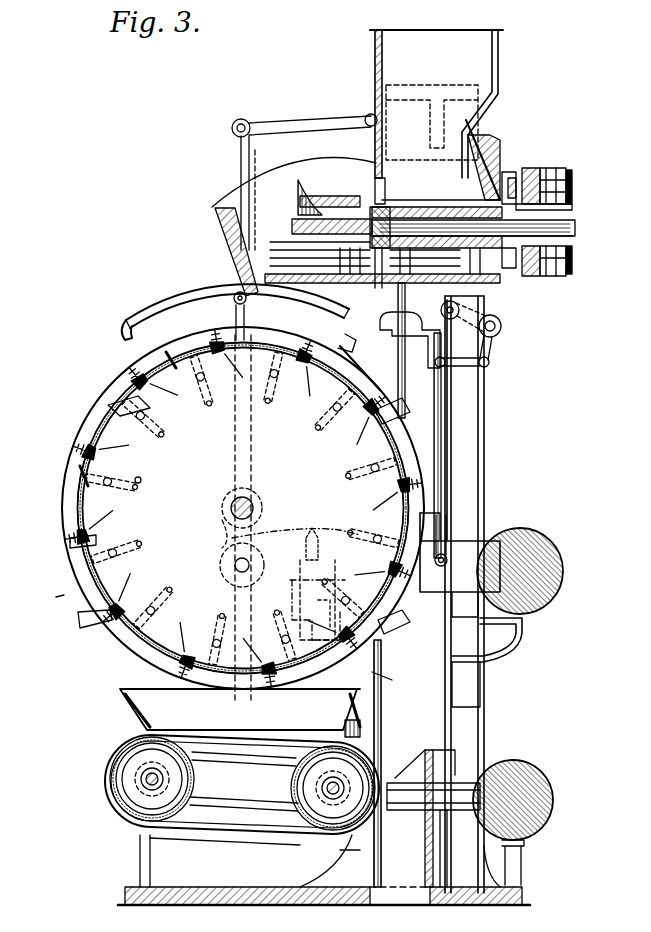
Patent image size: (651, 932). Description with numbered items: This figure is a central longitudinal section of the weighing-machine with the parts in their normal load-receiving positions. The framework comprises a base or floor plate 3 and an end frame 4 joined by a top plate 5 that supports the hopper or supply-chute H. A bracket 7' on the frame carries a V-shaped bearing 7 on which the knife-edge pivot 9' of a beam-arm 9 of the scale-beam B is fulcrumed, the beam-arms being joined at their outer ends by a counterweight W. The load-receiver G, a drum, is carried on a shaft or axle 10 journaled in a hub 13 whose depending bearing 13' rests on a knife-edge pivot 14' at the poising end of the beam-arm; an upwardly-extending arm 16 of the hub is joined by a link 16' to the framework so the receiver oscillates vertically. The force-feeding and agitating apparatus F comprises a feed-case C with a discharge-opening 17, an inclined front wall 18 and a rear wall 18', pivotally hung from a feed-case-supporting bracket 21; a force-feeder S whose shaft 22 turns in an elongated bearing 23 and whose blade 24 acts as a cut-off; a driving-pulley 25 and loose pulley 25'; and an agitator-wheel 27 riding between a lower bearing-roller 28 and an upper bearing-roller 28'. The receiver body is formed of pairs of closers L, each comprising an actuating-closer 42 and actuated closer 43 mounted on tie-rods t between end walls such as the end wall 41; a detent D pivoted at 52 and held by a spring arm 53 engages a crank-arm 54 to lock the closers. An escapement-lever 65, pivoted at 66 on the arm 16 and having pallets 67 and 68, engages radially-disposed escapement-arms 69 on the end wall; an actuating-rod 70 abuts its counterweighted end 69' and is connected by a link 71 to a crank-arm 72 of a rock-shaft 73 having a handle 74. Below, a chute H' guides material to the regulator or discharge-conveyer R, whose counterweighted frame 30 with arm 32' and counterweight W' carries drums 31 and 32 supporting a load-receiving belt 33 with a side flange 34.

The base or floor plate 3 is at (262, 893).
The end frame 4 is at (485, 420).
The top plate or beam 5 is at (440, 84).
The V-shaped bearing 7 is at (296, 584).
The bracket 7' is at (329, 613).
The beam-arm 9 is at (462, 608).
The knife-edge pivot 9' is at (314, 535).
The shaft or axle 10 is at (252, 505).
The hub 13 is at (233, 517).
The depending bearing 13' is at (213, 532).
The knife-edge pivot 14' is at (254, 562).
The upwardly-extending arm 16 is at (227, 193).
The link 16' is at (304, 113).
The discharge-opening 17 is at (300, 243).
The inclined front wall 18 is at (225, 252).
The rear wall 18' is at (452, 165).
The feed-case-supporting bracket 21 is at (494, 150).
The feed-screw shaft 22 is at (576, 228).
The elongated bearing 23 is at (422, 207).
The blade 24 is at (308, 196).
The driving-pulley 25 is at (545, 207).
The loose pulley 25' is at (585, 211).
The agitator-wheel 27 is at (566, 188).
The lower bearing-roller 28 is at (537, 271).
The upper bearing-roller 28' is at (521, 203).
The regulator carrier or frame 30 is at (433, 796).
The belt-carrying drum 31 is at (305, 768).
The belt-carrying drum 32 is at (235, 807).
The regulator-frame arm 32' is at (225, 838).
The load-receiving belt 33 is at (226, 774).
The side flange 34 is at (110, 752).
The end wall 41 is at (60, 600).
The actuating-closer 42 is at (200, 338).
The actuated closer 43 is at (222, 322).
The detent pivot 52 is at (242, 508).
The spring arm 53 is at (139, 472).
The crank-arm 54 is at (158, 352).
The escapement-lever 65 is at (164, 302).
The pivotal support 66 is at (237, 292).
The pallet 67 is at (126, 326).
The pallet 68 is at (359, 362).
The escapement-arm 69 is at (245, 513).
The counterweighted end 69' is at (410, 340).
The actuating-rod 70 is at (450, 384).
The link 71 is at (462, 358).
The crank-arm 72 is at (492, 348).
The rock-shaft 73 is at (492, 315).
The handle 74 is at (446, 304).
The hopper or supply-chute H is at (436, 149).
The chute H' is at (226, 713).
The feed-case C is at (291, 183).
The force-feeder S is at (255, 408).
The load-receiver G is at (243, 508).
The pair of closers L is at (229, 488).
The detent or latch D is at (242, 499).
The closer-shaft or tie-rod t is at (233, 518).
The scale-beam B is at (452, 544).
The counterweight W is at (507, 585).
The counterweight W' is at (526, 823).
The regulator or discharge-conveyer R is at (242, 784).
The force-feeding and agitating apparatus F is at (552, 199).